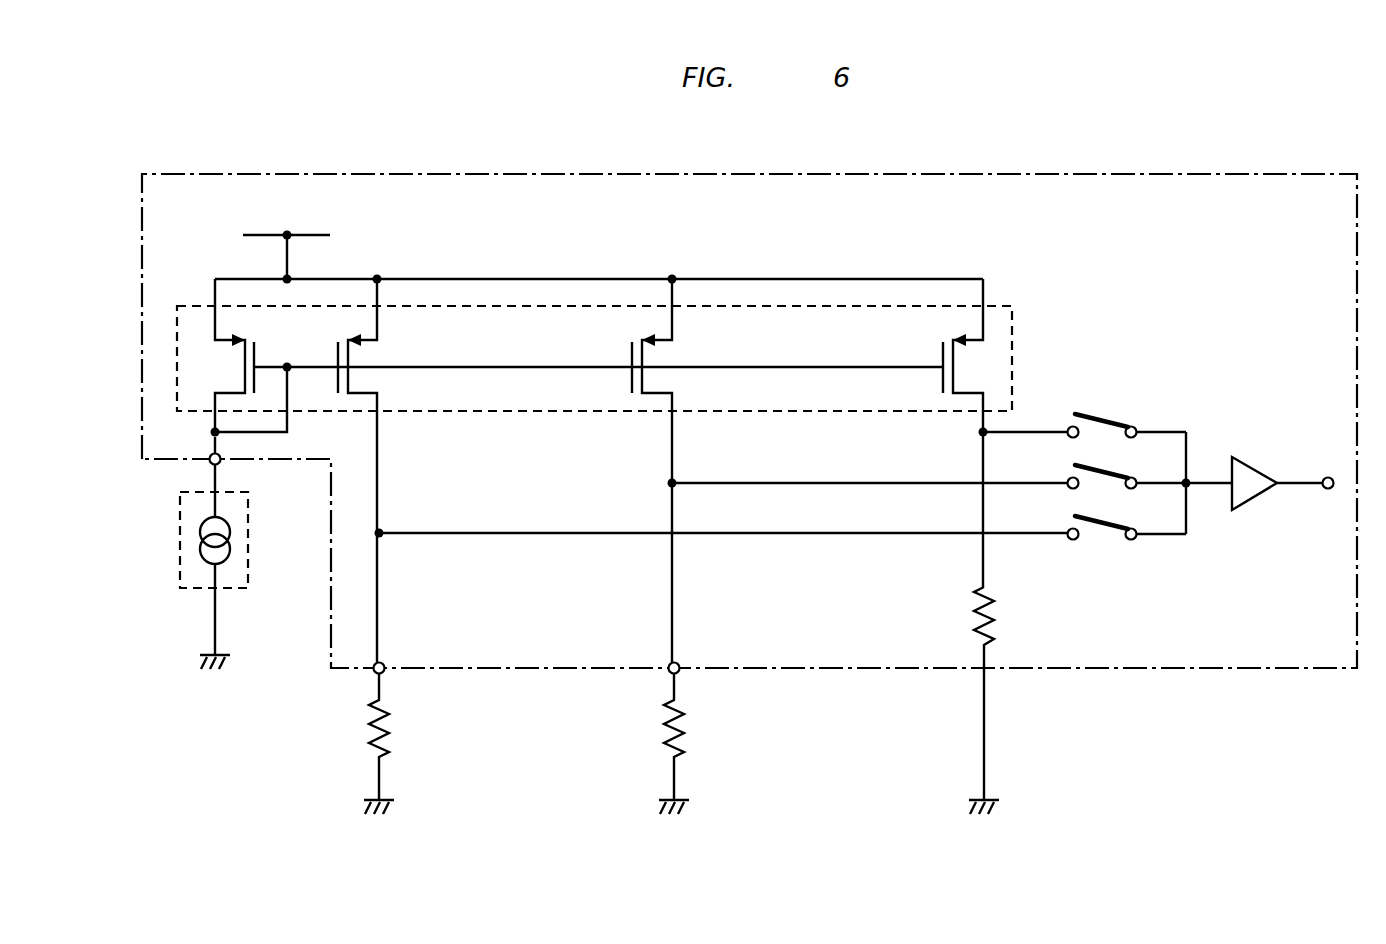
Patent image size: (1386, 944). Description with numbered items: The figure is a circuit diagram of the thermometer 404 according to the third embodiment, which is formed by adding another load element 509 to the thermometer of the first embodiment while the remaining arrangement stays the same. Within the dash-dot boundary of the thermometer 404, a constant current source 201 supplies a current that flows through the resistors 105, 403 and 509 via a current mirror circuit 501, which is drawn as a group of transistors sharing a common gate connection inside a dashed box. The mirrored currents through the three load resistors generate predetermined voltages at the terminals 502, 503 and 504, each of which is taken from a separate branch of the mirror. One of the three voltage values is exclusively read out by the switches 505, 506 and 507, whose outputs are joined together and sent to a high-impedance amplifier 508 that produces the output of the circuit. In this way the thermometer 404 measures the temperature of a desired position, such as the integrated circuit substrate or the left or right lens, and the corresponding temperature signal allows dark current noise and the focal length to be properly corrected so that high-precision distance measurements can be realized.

The thermometer 404 is at (1290, 173).
The current mirror circuit 501 is at (1012, 325).
The constant current source 201 is at (178, 525).
The terminal 502 is at (383, 537).
The terminal 503 is at (672, 483).
The terminal 504 is at (976, 432).
The switch 505 is at (1104, 538).
The switch 506 is at (1103, 470).
The switch 507 is at (1104, 418).
The high-impedance amplifier 508 is at (1247, 464).
The load element 509 is at (994, 620).
The resistor 105 is at (392, 736).
The resistor 403 is at (687, 736).